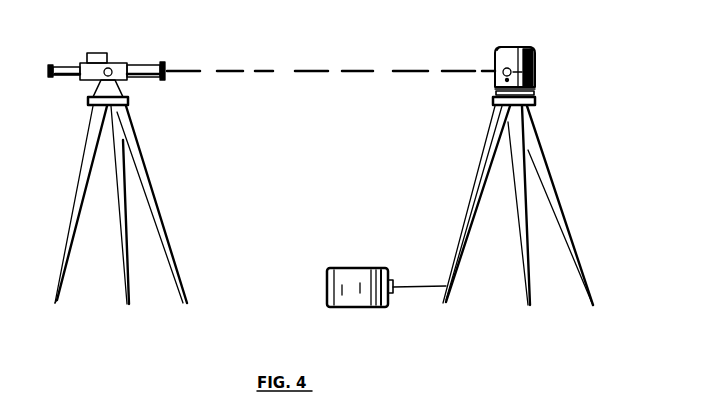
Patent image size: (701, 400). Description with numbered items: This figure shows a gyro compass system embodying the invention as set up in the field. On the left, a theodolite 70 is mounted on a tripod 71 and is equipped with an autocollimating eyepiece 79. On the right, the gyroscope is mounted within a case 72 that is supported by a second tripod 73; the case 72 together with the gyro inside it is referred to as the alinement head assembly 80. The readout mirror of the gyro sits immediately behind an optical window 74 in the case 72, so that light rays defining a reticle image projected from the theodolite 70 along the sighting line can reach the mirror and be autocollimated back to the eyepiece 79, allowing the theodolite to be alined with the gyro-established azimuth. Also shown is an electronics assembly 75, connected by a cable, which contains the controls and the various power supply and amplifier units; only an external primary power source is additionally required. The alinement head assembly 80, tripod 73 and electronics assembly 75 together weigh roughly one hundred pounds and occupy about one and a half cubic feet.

The theodolite 70 is at (147, 62).
The autocollimating eyepiece 79 is at (98, 57).
The tripod 71 is at (140, 162).
The case 72 is at (534, 50).
The alinement head assembly 80 is at (518, 42).
The optical window 74 is at (535, 67).
The tripod 73 is at (543, 140).
The electronics assembly 75 is at (363, 273).